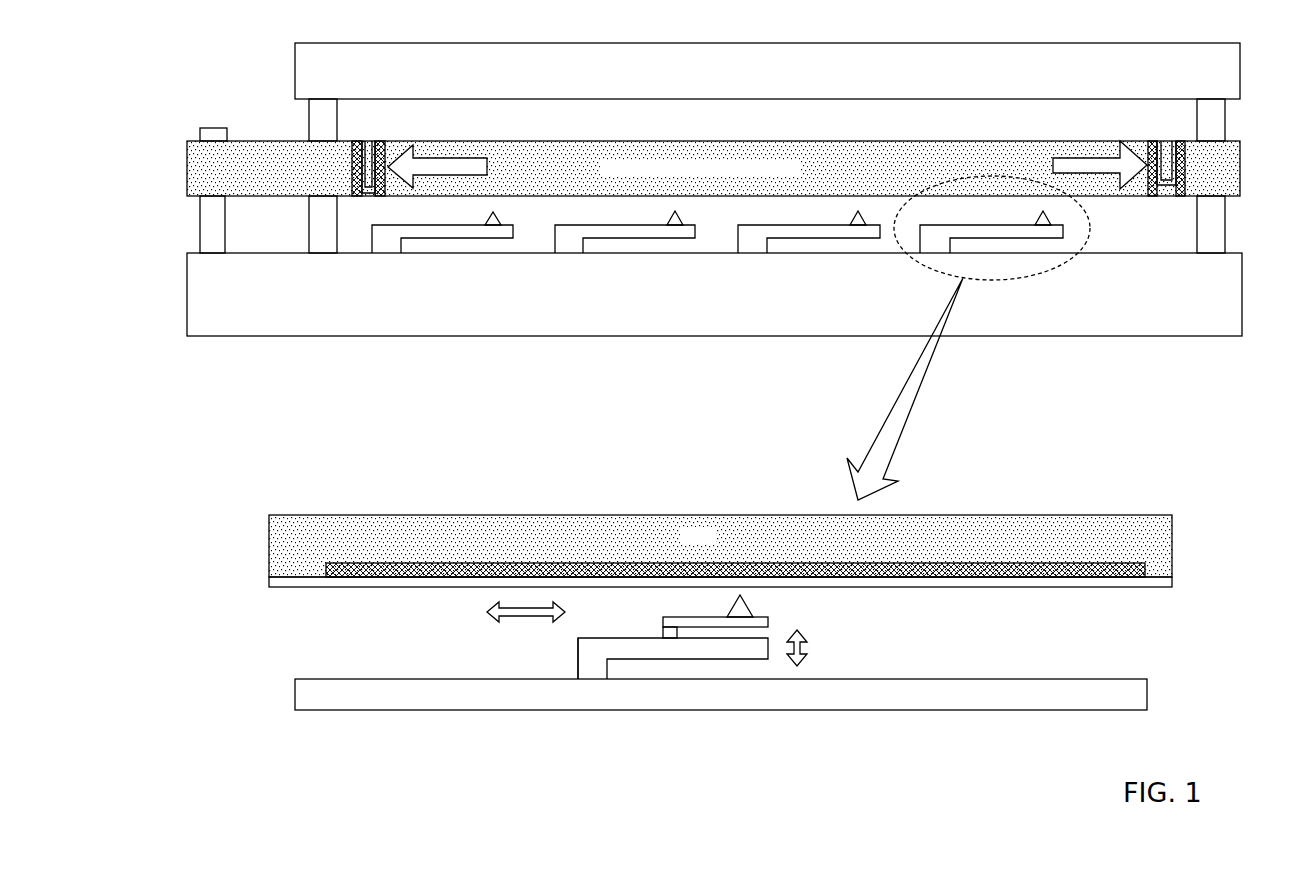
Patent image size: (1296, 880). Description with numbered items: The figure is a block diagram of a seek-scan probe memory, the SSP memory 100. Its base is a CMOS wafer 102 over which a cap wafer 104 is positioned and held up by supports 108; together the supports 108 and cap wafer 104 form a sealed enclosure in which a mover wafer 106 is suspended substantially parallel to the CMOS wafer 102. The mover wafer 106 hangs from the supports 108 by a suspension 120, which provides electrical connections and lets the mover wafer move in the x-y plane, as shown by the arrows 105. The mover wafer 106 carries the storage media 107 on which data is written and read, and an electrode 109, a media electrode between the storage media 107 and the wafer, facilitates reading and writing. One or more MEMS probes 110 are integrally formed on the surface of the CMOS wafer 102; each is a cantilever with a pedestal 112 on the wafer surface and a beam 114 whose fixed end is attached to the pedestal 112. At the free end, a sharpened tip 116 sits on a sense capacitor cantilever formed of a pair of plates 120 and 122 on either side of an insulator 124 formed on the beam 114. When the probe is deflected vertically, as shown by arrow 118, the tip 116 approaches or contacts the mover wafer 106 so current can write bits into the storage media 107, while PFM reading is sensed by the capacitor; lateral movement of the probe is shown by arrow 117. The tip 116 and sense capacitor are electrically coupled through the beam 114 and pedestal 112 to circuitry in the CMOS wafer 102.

The SSP memory 100 is at (230, 70).
The CMOS wafer 102 is at (425, 299).
The cap wafer 104 is at (613, 79).
The arrows 105 is at (450, 175).
The mover wafer 106 is at (590, 179).
The storage media 107 is at (268, 580).
The supports 108 is at (308, 130).
The electrode 109 is at (392, 562).
The MEMS probes 110 is at (620, 238).
The pedestal 112 is at (577, 665).
The beam 114 is at (648, 650).
The sharpened tip 116 is at (748, 609).
The arrow 117 is at (520, 616).
The arrow 118 is at (803, 648).
The suspension 120 is at (357, 141).
The plate 122 is at (768, 621).
The insulator 124 is at (663, 633).